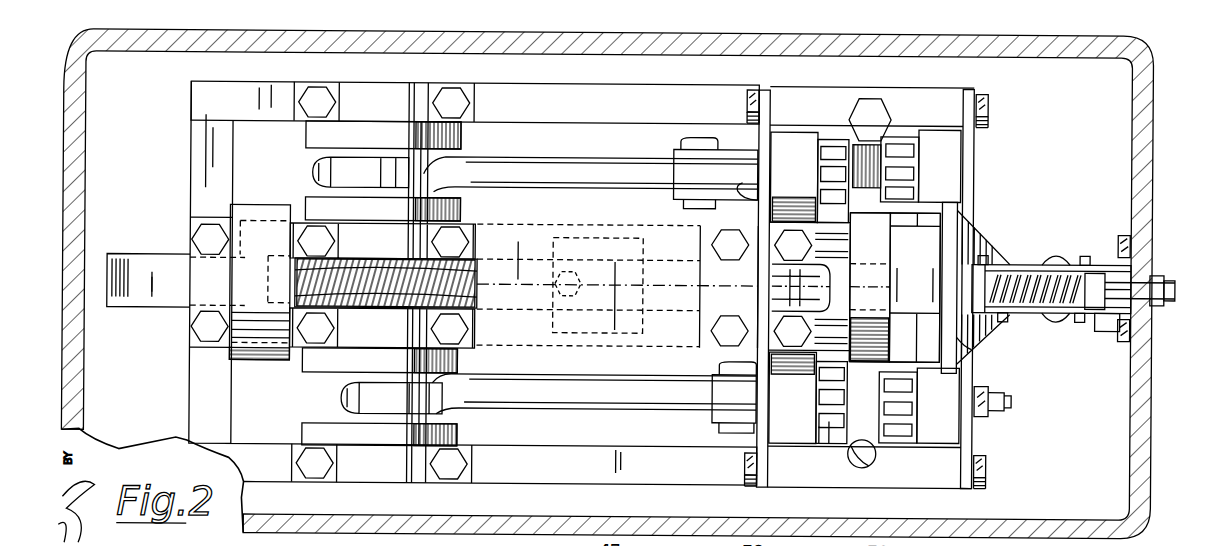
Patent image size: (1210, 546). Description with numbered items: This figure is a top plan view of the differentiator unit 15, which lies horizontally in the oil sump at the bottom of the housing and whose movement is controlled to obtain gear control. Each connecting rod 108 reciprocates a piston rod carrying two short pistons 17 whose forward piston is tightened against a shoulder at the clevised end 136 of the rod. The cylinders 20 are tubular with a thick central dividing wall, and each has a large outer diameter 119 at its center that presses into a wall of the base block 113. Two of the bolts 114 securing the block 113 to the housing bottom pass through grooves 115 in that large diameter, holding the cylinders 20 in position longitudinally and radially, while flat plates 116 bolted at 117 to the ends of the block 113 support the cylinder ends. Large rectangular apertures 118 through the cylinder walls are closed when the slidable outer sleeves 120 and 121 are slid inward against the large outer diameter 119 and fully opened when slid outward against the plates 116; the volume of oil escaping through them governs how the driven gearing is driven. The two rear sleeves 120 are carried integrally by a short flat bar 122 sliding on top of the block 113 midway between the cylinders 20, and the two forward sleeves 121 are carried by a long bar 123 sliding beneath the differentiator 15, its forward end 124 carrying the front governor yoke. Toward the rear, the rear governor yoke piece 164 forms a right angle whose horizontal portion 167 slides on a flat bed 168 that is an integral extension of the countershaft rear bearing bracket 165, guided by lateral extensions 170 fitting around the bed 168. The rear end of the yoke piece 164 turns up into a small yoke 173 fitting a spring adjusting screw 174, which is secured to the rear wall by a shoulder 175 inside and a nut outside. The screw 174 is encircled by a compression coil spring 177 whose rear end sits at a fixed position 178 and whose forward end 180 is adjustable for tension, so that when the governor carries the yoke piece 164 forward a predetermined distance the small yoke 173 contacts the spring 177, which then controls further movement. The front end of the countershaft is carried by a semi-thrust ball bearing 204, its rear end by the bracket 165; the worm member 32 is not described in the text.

The differentiator unit 15 is at (258, 146).
The piston 17 is at (820, 168).
The cylinder 20 is at (830, 140).
The worm 32 is at (298, 284).
The connecting rod 108 is at (545, 166).
The base block 113 is at (676, 90).
The bolt 114 is at (882, 118).
The groove 115 is at (875, 446).
The flat plate 116 is at (764, 204).
The bolt 117 is at (745, 104).
The rectangular aperture 118 is at (830, 420).
The large outer diameter 119 is at (917, 462).
The rear sleeve 120 is at (926, 169).
The forward sleeve 121 is at (779, 177).
The short flat bar 122 is at (832, 296).
The long bar 123 is at (655, 326).
The forward end 124 is at (131, 311).
The clevised end 136 is at (672, 158).
The rear governor yoke piece 164 is at (965, 338).
The countershaft rear bearing bracket 165 is at (857, 240).
The horizontal portion 167 is at (960, 347).
The flat bed 168 is at (900, 290).
The lateral extension 170 is at (1098, 262).
The small yoke 173 is at (1110, 312).
The spring adjusting screw 174 is at (1098, 280).
The shoulder 175 is at (1148, 265).
The compression coil spring 177 is at (1040, 316).
The fixed position 178 is at (1083, 258).
The forward end 180 is at (1000, 316).
The semi-thrust ball bearing 204 is at (250, 363).